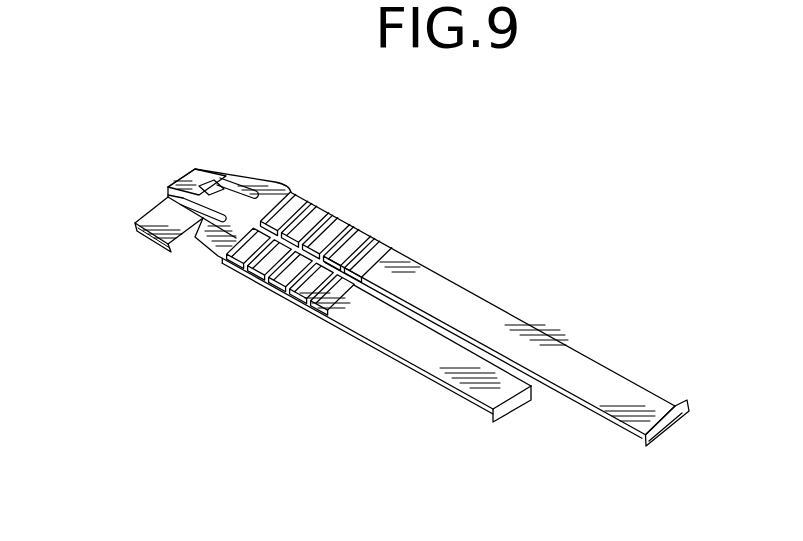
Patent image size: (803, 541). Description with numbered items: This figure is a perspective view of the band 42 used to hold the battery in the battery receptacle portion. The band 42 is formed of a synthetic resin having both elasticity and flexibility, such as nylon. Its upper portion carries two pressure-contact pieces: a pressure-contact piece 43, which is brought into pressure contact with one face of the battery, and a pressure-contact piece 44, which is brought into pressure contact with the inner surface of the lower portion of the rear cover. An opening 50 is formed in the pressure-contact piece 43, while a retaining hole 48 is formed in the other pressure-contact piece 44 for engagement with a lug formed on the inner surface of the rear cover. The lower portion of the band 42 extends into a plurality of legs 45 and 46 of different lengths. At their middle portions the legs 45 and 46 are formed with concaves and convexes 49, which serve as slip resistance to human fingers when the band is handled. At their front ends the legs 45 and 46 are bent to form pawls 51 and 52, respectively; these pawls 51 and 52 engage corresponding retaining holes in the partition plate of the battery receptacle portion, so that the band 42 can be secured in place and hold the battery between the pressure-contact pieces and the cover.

The band 42 is at (277, 180).
The pressure-contact piece 43 is at (160, 212).
The pressure-contact piece 44 is at (190, 175).
The leg 45 is at (430, 283).
The leg 46 is at (370, 322).
The retaining hole 48 is at (215, 178).
The concaves and convexes 49 is at (341, 232).
The opening 50 is at (155, 245).
The pawl 51 is at (672, 403).
The pawl 52 is at (517, 410).